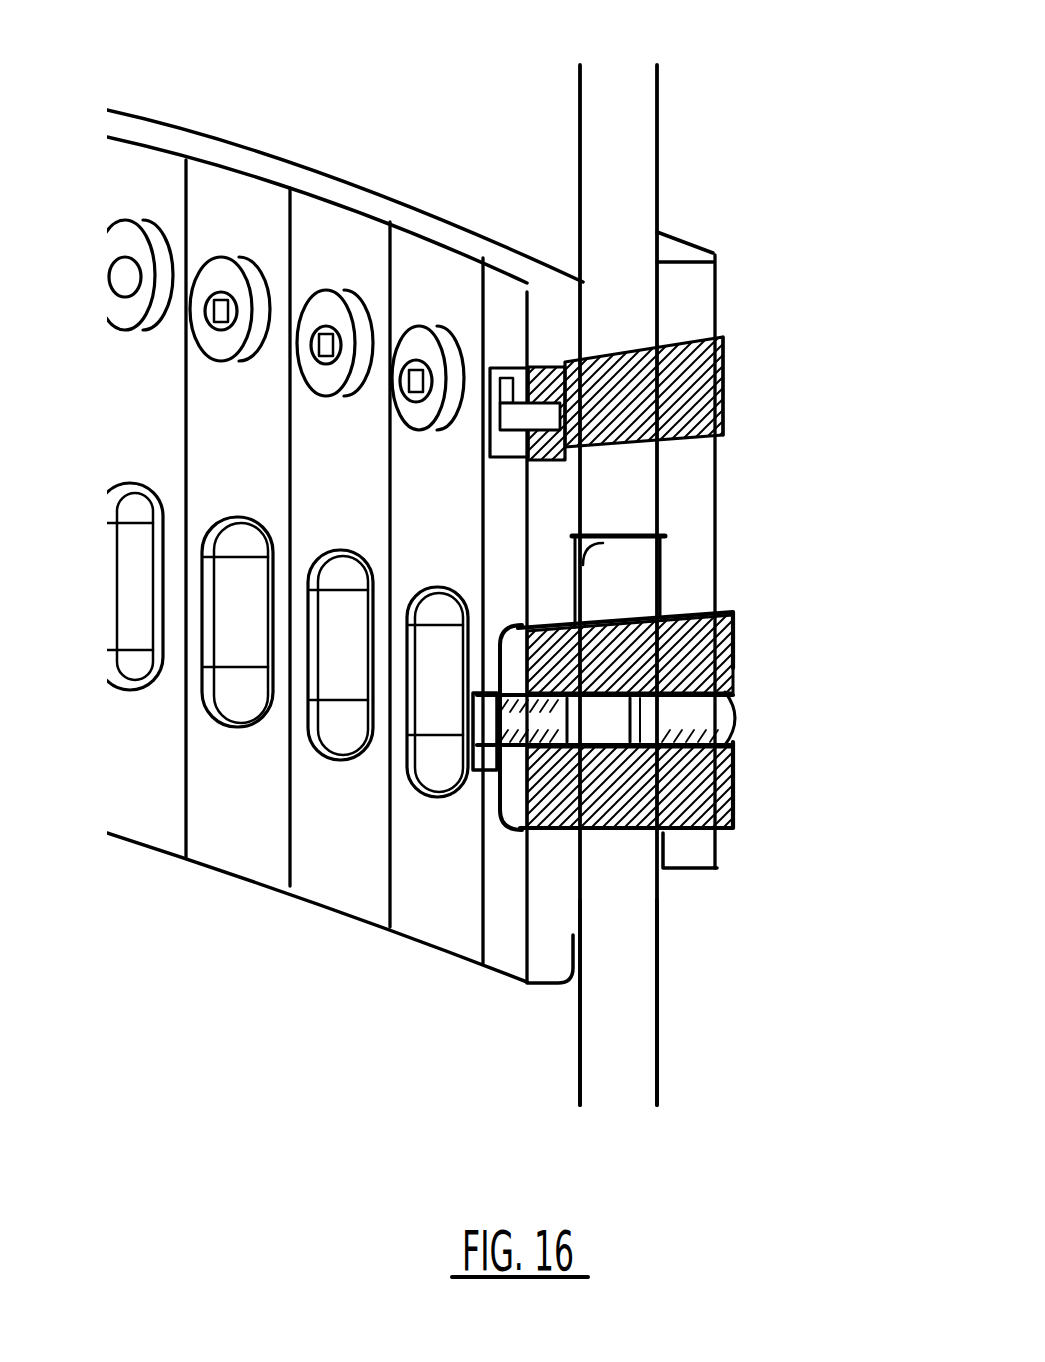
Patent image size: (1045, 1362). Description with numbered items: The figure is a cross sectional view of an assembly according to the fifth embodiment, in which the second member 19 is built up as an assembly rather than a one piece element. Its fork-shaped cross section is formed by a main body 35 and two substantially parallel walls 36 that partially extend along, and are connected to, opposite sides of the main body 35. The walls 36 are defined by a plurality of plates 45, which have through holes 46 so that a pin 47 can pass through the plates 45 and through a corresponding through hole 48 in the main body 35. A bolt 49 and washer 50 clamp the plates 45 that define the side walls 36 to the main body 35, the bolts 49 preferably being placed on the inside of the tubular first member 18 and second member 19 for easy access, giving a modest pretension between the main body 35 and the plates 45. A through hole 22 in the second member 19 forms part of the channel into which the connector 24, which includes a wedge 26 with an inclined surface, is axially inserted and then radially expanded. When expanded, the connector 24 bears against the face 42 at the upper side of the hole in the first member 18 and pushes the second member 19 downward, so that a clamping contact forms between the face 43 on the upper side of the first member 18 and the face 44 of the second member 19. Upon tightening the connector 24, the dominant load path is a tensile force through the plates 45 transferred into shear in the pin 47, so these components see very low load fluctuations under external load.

The first member 18 is at (628, 1040).
The second member 19 is at (745, 135).
The through hole 22 is at (437, 708).
The connector 24 is at (775, 688).
The wedge 26 is at (700, 735).
The main body 35 is at (640, 97).
The walls 36 is at (682, 487).
The face 42 is at (617, 624).
The face 43 is at (628, 545).
The face 44 is at (640, 559).
The plates 45 is at (320, 220).
The through holes 46 is at (680, 400).
The pin 47 is at (680, 392).
The through hole 48 is at (615, 395).
The bolt 49 is at (203, 302).
The washer 50 is at (239, 268).